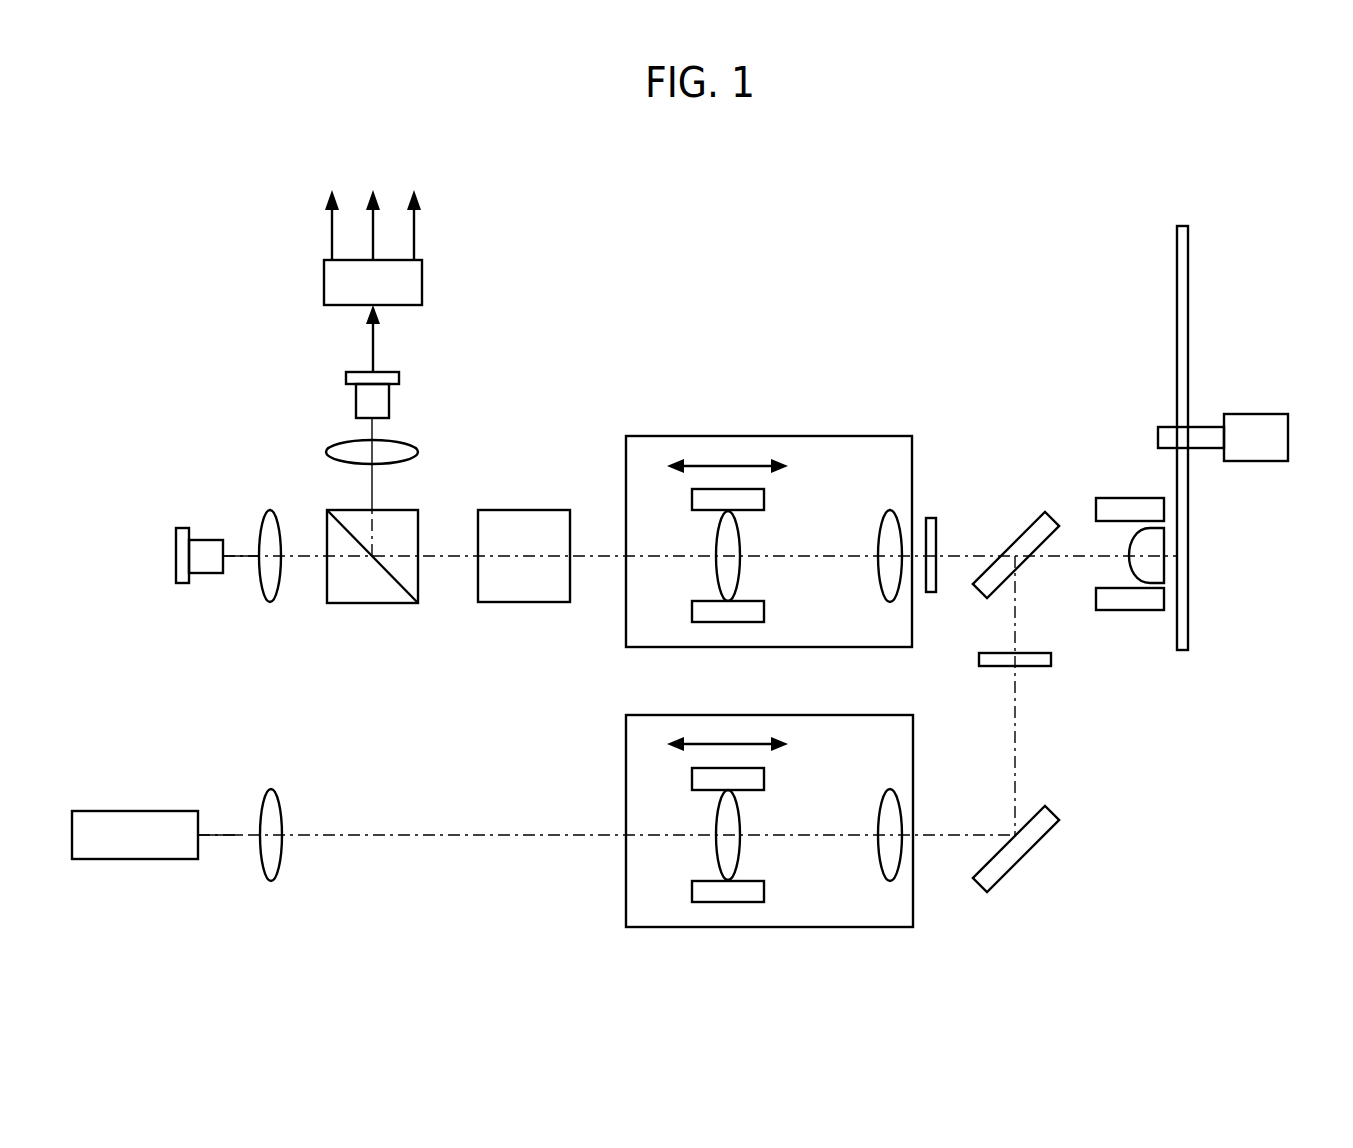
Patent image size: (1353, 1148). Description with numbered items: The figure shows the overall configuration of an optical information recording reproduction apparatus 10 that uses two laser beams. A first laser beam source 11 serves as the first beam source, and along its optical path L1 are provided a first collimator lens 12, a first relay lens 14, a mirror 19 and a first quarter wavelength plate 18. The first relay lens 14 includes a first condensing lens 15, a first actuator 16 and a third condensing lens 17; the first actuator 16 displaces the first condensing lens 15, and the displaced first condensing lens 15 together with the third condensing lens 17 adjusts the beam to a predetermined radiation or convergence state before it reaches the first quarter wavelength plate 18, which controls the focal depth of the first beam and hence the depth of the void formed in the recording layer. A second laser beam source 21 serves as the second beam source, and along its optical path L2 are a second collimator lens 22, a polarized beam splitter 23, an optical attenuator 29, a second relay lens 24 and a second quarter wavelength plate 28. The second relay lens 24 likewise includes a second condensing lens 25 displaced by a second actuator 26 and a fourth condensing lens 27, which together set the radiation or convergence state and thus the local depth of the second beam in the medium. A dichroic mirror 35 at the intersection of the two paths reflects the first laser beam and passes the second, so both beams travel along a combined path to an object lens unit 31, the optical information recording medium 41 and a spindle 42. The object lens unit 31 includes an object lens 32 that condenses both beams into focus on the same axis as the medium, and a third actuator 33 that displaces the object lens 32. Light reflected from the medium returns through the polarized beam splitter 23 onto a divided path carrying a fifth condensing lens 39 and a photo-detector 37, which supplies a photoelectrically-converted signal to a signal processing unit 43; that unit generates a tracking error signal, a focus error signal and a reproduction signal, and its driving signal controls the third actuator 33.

The optical information recording reproduction apparatus 10 is at (193, 136).
The first laser beam source 11 is at (127, 811).
The first collimator lens 12 is at (272, 790).
The first relay lens 14 is at (777, 715).
The first condensing lens 15 is at (717, 826).
The first actuator 16 is at (764, 781).
The third condensing lens 17 is at (879, 825).
The first quarter wavelength plate 18 is at (1030, 653).
The mirror 19 is at (1050, 813).
The second laser beam source 21 is at (176, 555).
The second collimator lens 22 is at (272, 510).
The polarized beam splitter 23 is at (398, 510).
The second relay lens 24 is at (776, 436).
The second condensing lens 25 is at (717, 548).
The second actuator 26 is at (764, 502).
The fourth condensing lens 27 is at (879, 547).
The second quarter wavelength plate 28 is at (936, 519).
The optical attenuator 29 is at (526, 510).
The object lens unit 31 is at (1186, 552).
The object lens 32 is at (1164, 543).
The third actuator 33 is at (1164, 510).
The dichroic mirror 35 is at (1040, 514).
The photo-detector 37 is at (356, 408).
The fifth condensing lens 39 is at (400, 444).
The optical information recording medium 41 is at (1188, 258).
The spindle 42 is at (1288, 435).
The signal processing unit 43 is at (422, 281).
The optical path of the first laser beam source L1 is at (220, 835).
The optical path of the second laser beam source L2 is at (238, 555).